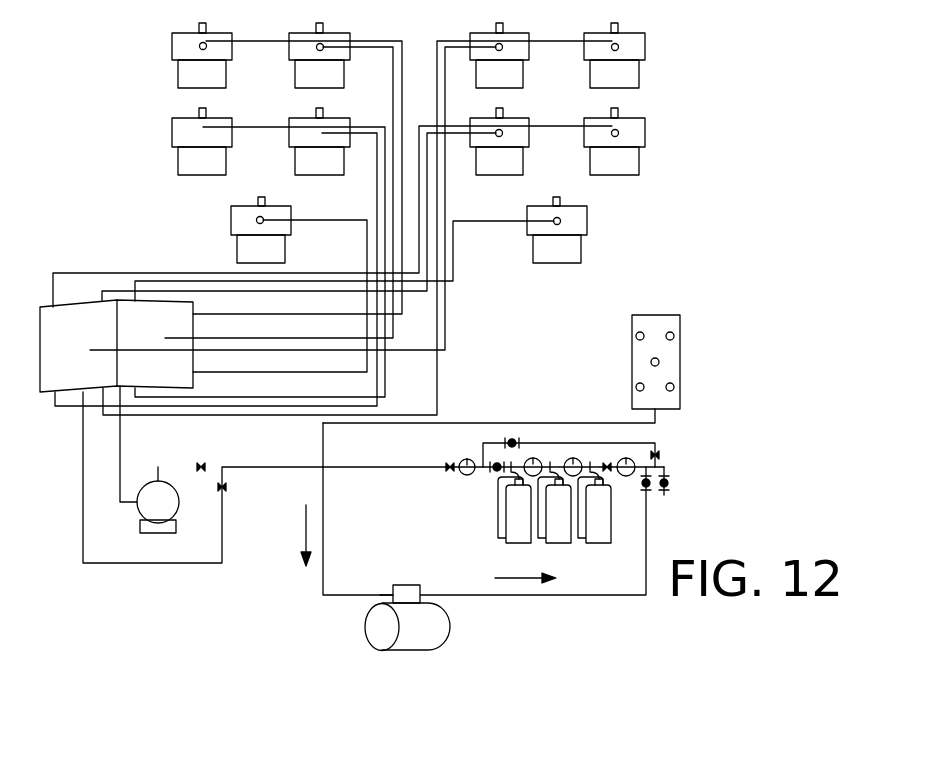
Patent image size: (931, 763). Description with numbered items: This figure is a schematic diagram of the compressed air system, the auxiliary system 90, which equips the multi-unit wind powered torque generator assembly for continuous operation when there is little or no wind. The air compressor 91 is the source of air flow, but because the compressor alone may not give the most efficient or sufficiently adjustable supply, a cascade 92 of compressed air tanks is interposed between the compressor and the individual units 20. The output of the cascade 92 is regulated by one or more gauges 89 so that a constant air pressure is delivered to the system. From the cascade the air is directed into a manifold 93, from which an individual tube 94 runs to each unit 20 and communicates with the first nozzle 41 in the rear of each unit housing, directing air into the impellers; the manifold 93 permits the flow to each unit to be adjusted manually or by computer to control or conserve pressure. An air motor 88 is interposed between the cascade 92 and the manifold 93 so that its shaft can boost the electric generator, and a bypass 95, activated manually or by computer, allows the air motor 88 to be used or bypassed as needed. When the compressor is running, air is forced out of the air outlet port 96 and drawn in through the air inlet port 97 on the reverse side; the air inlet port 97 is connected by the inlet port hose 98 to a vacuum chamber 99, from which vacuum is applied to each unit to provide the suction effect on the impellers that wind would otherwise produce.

The unit 20 is at (183, 133).
The first nozzle 41 is at (200, 46).
The individual tube 94 is at (555, 41).
The manifold 93 is at (48, 348).
The air motor 88 is at (160, 508).
The bypass 95 is at (226, 488).
The auxiliary system 90 is at (714, 450).
The gauge 89 is at (460, 460).
The cascade 92 is at (480, 505).
The inlet port hose 98 is at (543, 423).
The vacuum chamber 99 is at (672, 359).
The air outlet port 96 is at (423, 590).
The air inlet port 97 is at (390, 592).
The air compressor 91 is at (428, 623).